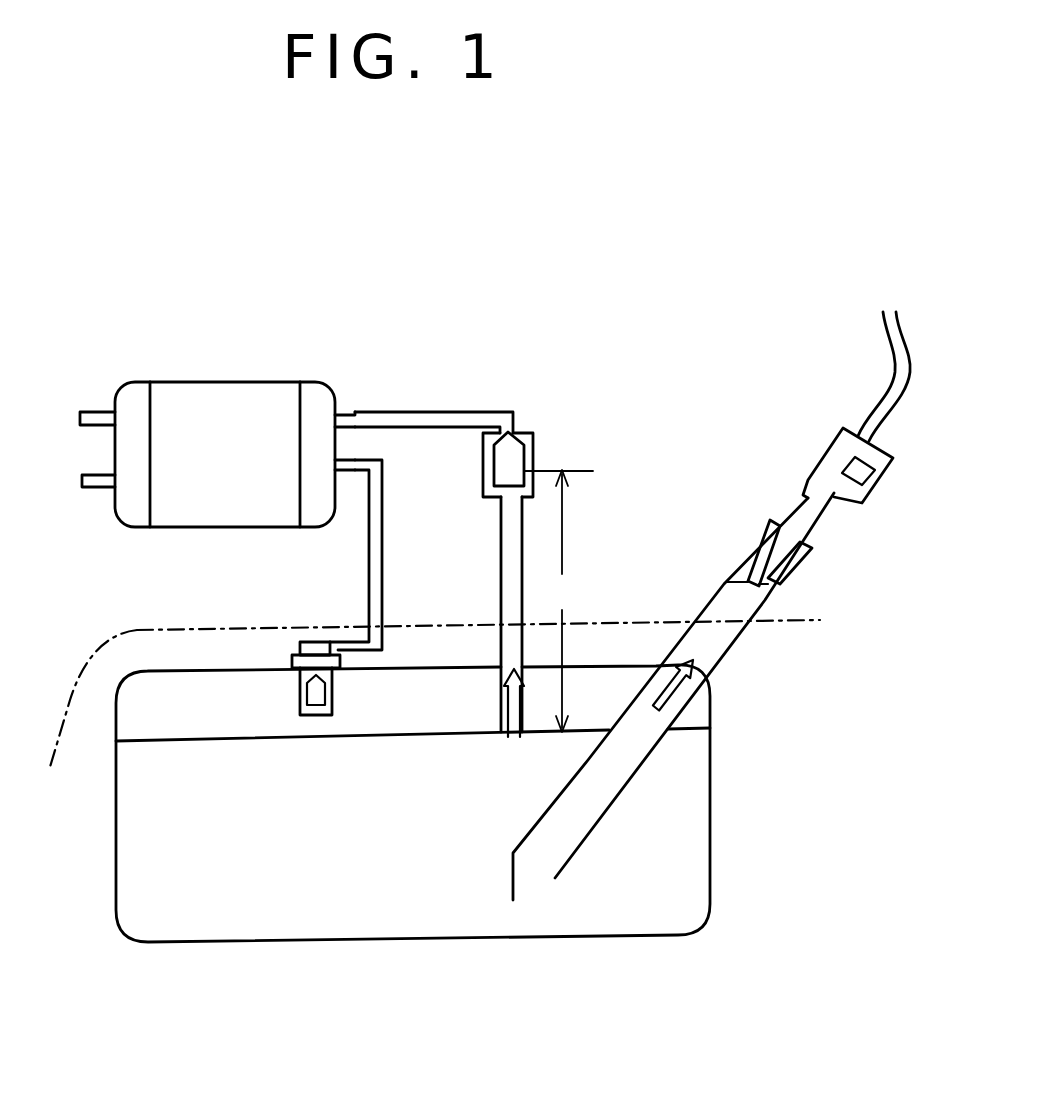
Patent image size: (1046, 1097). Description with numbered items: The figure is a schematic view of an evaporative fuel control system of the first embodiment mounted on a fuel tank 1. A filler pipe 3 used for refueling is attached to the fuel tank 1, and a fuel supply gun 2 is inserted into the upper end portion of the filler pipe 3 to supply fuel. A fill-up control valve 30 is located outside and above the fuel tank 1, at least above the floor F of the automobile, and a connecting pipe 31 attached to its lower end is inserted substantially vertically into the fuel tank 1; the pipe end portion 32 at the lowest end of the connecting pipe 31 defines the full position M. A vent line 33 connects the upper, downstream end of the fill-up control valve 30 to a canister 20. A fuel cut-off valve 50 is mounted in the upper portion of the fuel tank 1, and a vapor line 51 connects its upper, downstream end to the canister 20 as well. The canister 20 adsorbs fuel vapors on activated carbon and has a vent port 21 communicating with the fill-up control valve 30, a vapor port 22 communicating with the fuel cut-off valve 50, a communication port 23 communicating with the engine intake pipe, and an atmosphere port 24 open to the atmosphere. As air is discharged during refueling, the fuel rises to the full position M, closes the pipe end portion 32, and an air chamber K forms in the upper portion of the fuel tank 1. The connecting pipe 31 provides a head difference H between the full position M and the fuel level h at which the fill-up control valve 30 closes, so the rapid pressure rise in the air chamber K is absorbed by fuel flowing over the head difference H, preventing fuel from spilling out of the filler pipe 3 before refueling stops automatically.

The fuel tank 1 is at (376, 856).
The fuel supply gun 2 is at (828, 450).
The filler pipe 3 is at (753, 624).
The canister 20 is at (242, 460).
The vent port 21 is at (348, 410).
The vapor port 22 is at (337, 471).
The communication port 23 is at (79, 411).
The atmosphere port 24 is at (86, 489).
The fill-up control valve 30 is at (531, 434).
The connecting pipe 31 is at (500, 549).
The pipe end portion 32 is at (506, 740).
The vent line 33 is at (460, 411).
The fuel cut-off valve 50 is at (296, 654).
The vapor line 51 is at (383, 520).
The air chamber K is at (414, 714).
The floor F is at (633, 619).
The head difference H is at (562, 601).
The fuel level h is at (571, 469).
The full position M is at (712, 712).